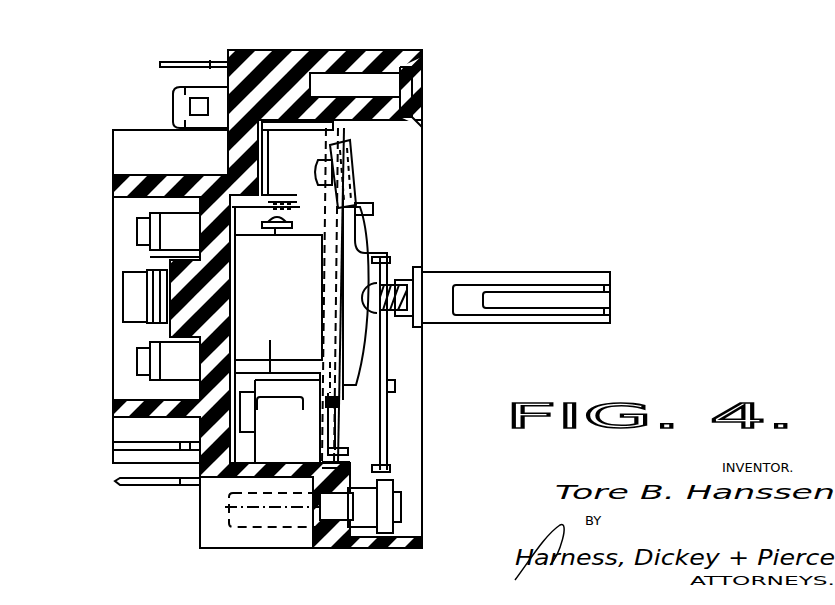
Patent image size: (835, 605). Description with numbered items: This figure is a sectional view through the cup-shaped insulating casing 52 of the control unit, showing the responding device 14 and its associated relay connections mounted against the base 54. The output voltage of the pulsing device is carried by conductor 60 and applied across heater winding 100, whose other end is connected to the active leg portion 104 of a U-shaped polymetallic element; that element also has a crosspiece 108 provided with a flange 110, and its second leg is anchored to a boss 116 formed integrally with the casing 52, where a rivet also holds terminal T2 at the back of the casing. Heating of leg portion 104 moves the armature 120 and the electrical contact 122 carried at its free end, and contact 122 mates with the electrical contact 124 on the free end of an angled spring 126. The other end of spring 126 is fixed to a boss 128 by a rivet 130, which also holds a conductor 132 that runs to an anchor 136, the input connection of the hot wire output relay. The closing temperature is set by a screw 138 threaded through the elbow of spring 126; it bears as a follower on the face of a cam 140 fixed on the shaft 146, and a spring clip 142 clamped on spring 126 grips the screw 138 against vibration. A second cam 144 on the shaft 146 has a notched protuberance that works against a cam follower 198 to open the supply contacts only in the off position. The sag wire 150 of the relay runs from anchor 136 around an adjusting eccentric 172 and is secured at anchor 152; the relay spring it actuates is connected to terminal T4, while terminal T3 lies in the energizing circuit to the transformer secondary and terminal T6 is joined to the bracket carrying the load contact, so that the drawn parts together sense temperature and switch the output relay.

The responding device 14 is at (346, 417).
The insulating casing 52 is at (303, 48).
The base 54 is at (165, 300).
The conductor 60 is at (265, 130).
The heater winding 100 is at (350, 402).
The leg portion 104 is at (310, 225).
The crosspiece 108 is at (345, 441).
The flange 110 is at (350, 457).
The boss 116 is at (341, 80).
The armature 120 is at (318, 165).
The electrical contact 122 is at (340, 175).
The electrical contact 124 is at (345, 200).
The angled spring 126 is at (392, 384).
The boss 128 is at (375, 547).
The rivet 130 is at (393, 500).
The conductor 132 is at (380, 515).
The anchor 136 is at (165, 377).
The screw 138 is at (404, 282).
The cam 140 is at (382, 358).
The spring clip 142 is at (393, 263).
The cam 144 is at (292, 293).
The shaft 146 is at (472, 323).
The sag wire 150 is at (150, 257).
The anchor 152 is at (177, 213).
The adjusting eccentric 172 is at (143, 289).
The cam follower 198 is at (280, 405).
The terminal T2 is at (175, 95).
The terminal T3 is at (198, 62).
The terminal T4 is at (143, 445).
The terminal T6 is at (150, 485).